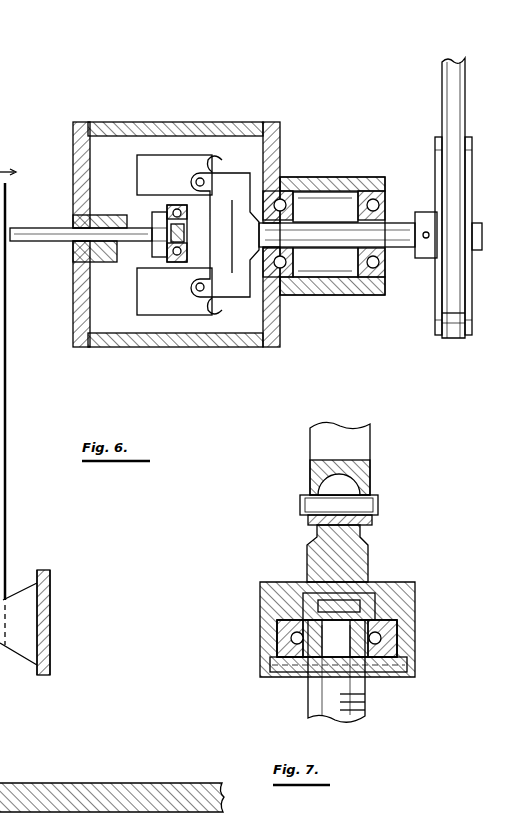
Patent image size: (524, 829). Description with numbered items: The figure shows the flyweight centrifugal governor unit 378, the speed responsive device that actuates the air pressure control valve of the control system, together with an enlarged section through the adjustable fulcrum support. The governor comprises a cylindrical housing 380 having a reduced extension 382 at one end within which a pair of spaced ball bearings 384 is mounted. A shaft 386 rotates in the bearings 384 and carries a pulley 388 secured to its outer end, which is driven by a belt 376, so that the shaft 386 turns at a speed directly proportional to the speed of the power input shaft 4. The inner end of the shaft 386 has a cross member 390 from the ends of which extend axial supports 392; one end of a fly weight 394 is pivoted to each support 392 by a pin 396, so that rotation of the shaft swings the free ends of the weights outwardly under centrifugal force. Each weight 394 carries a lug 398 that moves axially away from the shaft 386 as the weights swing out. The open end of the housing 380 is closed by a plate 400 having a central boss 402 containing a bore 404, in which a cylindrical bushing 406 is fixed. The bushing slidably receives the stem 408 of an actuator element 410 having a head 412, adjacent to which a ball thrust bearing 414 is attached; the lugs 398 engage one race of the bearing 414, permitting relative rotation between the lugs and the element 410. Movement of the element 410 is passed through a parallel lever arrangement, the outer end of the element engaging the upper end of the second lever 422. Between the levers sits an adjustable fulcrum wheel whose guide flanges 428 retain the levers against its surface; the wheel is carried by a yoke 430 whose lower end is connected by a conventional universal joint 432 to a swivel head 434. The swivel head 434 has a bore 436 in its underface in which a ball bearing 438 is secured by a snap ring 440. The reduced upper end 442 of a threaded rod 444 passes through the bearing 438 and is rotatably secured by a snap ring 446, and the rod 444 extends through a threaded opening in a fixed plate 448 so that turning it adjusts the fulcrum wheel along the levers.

In FIG. 6, the belt 376 is at (463, 75).
In FIG. 6, the flyweight centrifugal governor unit 378 is at (233, 115).
In FIG. 6, the cylindrical housing 380 is at (143, 122).
In FIG. 6, the reduced extension 382 is at (330, 177).
In FIG. 6, the ball bearings 384 is at (303, 191).
In FIG. 6, the shaft 386 is at (403, 223).
In FIG. 6, the pulley 388 is at (473, 150).
In FIG. 6, the cross member 390 is at (276, 300).
In FIG. 6, the axial supports 392 is at (229, 232).
In FIG. 6, the fly weight 394 is at (137, 160).
In FIG. 6, the pin 396 is at (196, 180).
In FIG. 6, the lug 398 is at (196, 222).
In FIG. 6, the plate 400 is at (73, 160).
In FIG. 6, the central boss 402 is at (80, 280).
In FIG. 6, the bore 404 is at (73, 215).
In FIG. 6, the cylindrical bushing 406 is at (73, 252).
In FIG. 6, the stem 408 is at (30, 228).
In FIG. 6, the actuator element 410 is at (12, 242).
In FIG. 6, the head 412 is at (155, 218).
In FIG. 6, the ball thrust bearing 414 is at (158, 268).
In FIG. 6, the guide flanges 428 is at (8, 397).
In FIG. 6, the yoke 430 is at (6, 490).
In FIG. 7, the yoke 430 is at (370, 441).
In FIG. 6, the second lever 422 is at (6, 500).
In FIG. 6, the universal joint 432 is at (6, 553).
In FIG. 7, the universal joint 432 is at (386, 497).
In FIG. 6, the power input shaft 4 is at (4, 721).
In FIG. 6, the fixed plate 448 is at (96, 783).
In FIG. 7, the swivel head 434 is at (376, 548).
In FIG. 7, the bore 436 is at (400, 640).
In FIG. 7, the ball bearing 438 is at (412, 618).
In FIG. 7, the snap ring 440 is at (407, 665).
In FIG. 7, the reduced upper end 442 is at (322, 680).
In FIG. 7, the threaded rod 444 is at (355, 692).
In FIG. 7, the snap ring 446 is at (324, 600).